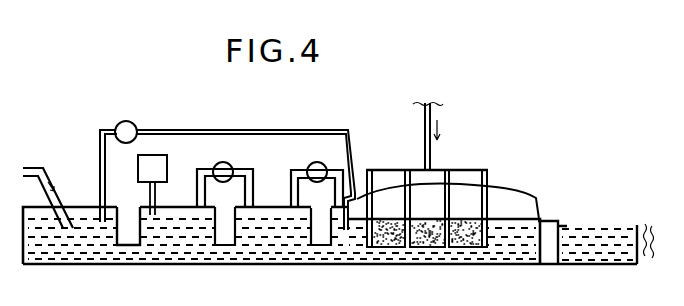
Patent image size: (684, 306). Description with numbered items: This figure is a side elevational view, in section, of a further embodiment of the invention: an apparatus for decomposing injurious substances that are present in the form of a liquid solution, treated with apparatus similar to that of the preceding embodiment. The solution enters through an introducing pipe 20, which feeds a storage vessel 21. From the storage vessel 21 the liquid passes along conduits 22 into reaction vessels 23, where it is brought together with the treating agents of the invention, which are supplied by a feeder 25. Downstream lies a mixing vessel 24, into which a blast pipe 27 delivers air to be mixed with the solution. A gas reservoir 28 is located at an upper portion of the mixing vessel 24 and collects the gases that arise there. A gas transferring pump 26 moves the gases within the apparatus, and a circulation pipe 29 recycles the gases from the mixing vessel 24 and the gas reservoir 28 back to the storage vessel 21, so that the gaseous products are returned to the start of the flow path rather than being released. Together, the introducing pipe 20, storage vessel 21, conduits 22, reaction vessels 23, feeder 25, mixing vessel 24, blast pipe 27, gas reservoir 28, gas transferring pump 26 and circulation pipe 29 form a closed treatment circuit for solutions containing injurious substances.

The introducing pipe 20 is at (41, 146).
The storage vessel 21 is at (88, 251).
The conduits 22 is at (136, 250).
The reaction vessels 23 is at (201, 252).
The mixing vessel 24 is at (400, 233).
The feeder 25 is at (150, 193).
The gas transferring pump 26 is at (219, 161).
The blast pipe 27 is at (398, 170).
The gas reservoir 28 is at (500, 190).
The circulation pipe 29 is at (267, 131).